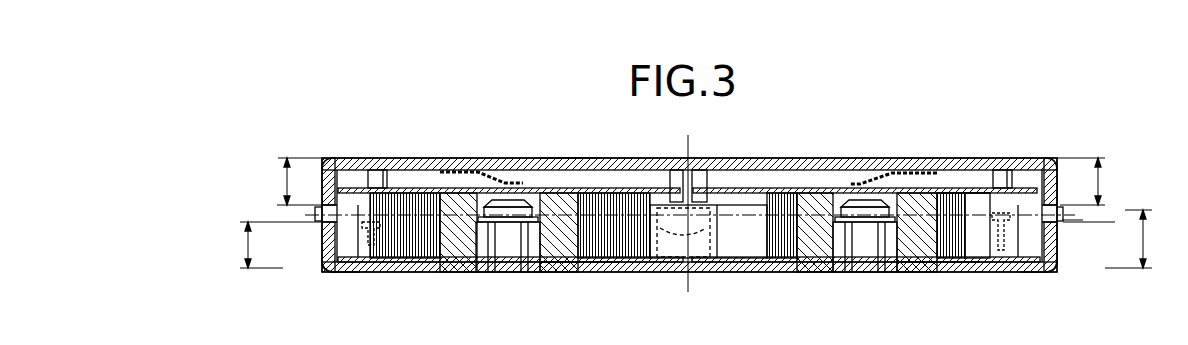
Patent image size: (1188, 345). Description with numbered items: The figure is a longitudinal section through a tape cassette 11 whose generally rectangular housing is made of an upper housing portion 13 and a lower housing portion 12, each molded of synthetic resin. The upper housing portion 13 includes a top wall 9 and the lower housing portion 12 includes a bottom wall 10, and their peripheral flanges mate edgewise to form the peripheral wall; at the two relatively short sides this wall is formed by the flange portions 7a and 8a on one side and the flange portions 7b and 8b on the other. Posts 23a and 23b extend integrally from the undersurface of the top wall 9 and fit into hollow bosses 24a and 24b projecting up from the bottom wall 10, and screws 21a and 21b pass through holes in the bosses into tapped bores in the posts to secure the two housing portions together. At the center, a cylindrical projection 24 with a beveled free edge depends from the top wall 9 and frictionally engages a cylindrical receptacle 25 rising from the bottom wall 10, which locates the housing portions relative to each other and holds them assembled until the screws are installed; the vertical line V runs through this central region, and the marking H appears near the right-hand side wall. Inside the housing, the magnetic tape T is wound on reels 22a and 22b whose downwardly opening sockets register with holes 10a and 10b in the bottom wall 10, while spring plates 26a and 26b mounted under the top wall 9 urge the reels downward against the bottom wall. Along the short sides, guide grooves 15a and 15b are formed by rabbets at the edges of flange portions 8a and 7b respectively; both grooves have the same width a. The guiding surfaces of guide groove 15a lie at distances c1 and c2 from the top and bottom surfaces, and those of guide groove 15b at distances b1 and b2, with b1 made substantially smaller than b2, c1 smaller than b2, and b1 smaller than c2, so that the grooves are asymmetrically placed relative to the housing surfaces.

The flange portion 7a is at (381, 151).
The flange portion 7b is at (1096, 151).
The flange portion 8a is at (322, 268).
The flange portion 8b is at (1104, 284).
The top wall 9 is at (721, 158).
The bottom wall 10 is at (717, 272).
The hole 10a is at (575, 272).
The hole 10b is at (963, 311).
The cassette 11 is at (987, 130).
The lower housing portion 12 is at (610, 276).
The upper housing portion 13 is at (571, 157).
The guide groove 15a is at (333, 251).
The guide groove 15b is at (1125, 252).
The screw 21a is at (392, 258).
The screw 21b is at (1023, 255).
The reel 22a is at (456, 250).
The reel 22b is at (818, 248).
The post 23a is at (442, 151).
The post 23b is at (1055, 151).
The cylindrical projection 24 is at (681, 178).
The hollow boss 24a is at (364, 250).
The hollow boss 24b is at (998, 248).
The cylindrical receptacle 25 is at (670, 257).
The spring plate 26a is at (528, 151).
The spring plate 26b is at (907, 151).
The vertical center axis V is at (688, 203).
The magnetic tape T is at (952, 202).
The height reference H is at (1082, 219).
The width a is at (288, 212).
The distance b1 is at (1093, 181).
The distance b2 is at (1138, 239).
The distance c1 is at (292, 183).
The distance c2 is at (242, 252).